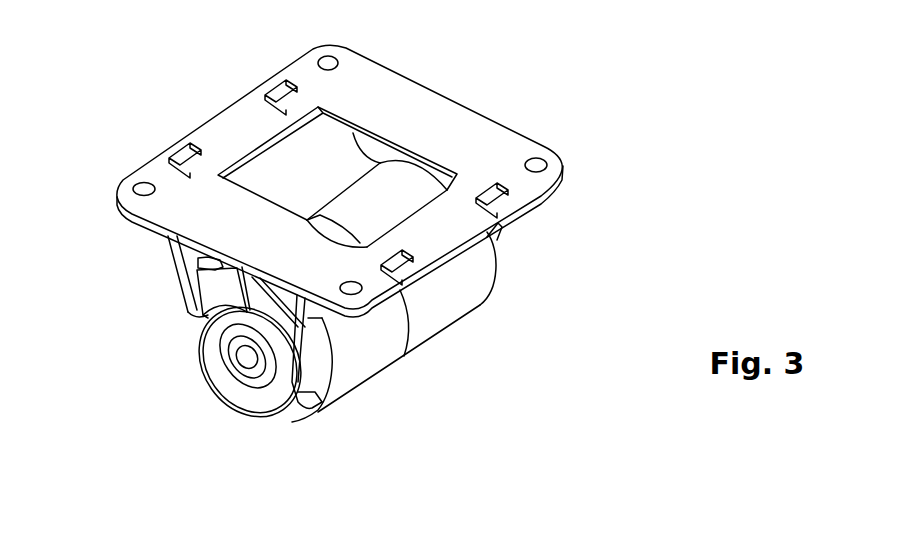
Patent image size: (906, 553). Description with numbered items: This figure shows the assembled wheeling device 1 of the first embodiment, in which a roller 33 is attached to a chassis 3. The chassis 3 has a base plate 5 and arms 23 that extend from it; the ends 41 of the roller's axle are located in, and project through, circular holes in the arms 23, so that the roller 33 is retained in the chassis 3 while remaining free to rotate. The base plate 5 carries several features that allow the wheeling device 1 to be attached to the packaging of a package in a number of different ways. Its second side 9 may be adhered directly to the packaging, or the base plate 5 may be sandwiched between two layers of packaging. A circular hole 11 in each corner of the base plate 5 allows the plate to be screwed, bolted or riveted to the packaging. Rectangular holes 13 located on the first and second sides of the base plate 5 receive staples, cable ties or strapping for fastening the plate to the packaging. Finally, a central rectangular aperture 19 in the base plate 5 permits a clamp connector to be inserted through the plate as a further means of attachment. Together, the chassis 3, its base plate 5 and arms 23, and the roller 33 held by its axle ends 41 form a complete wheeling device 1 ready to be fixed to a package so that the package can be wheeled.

The wheeling device 1 is at (640, 158).
The chassis 3 is at (282, 65).
The base plate 5 is at (190, 213).
The second side 9 is at (412, 113).
The circular hole 11 is at (350, 294).
The rectangular holes 13 is at (410, 254).
The central rectangular aperture 19 is at (291, 155).
The arms 23 is at (190, 296).
The roller 33 is at (445, 341).
The ends 41 is at (243, 372).